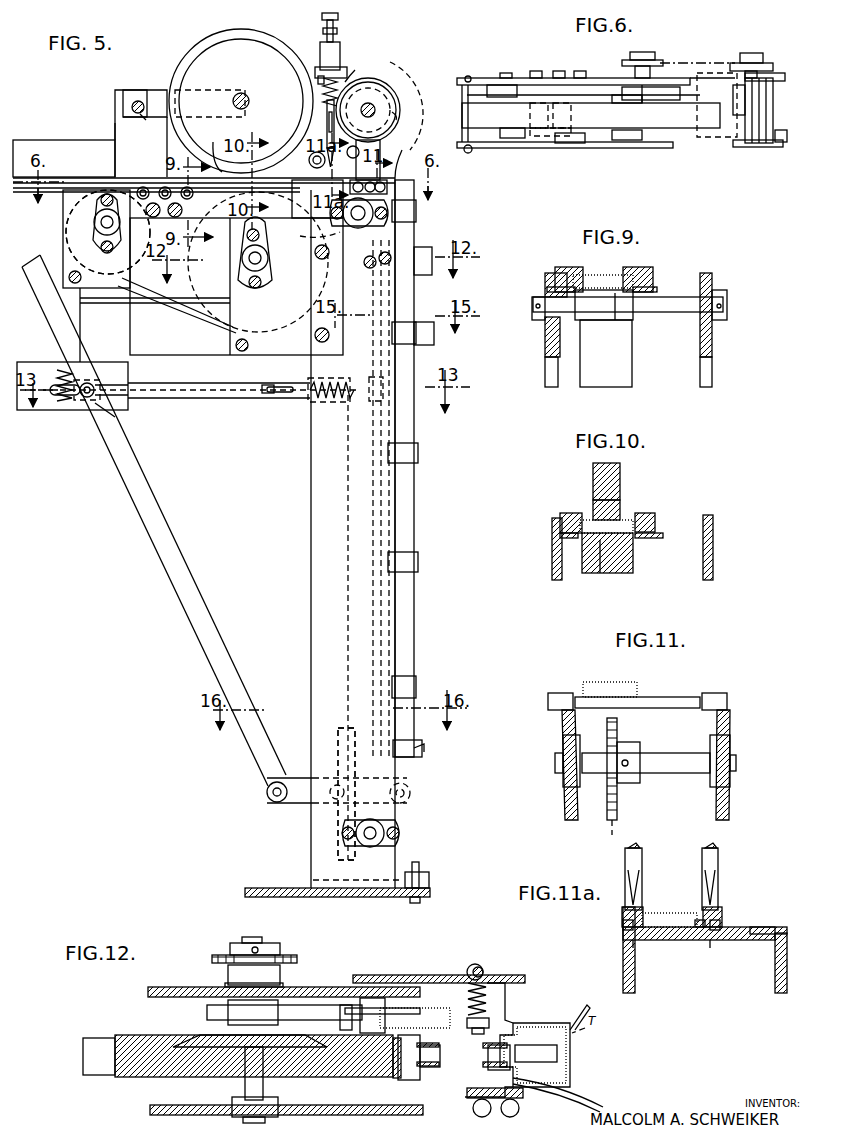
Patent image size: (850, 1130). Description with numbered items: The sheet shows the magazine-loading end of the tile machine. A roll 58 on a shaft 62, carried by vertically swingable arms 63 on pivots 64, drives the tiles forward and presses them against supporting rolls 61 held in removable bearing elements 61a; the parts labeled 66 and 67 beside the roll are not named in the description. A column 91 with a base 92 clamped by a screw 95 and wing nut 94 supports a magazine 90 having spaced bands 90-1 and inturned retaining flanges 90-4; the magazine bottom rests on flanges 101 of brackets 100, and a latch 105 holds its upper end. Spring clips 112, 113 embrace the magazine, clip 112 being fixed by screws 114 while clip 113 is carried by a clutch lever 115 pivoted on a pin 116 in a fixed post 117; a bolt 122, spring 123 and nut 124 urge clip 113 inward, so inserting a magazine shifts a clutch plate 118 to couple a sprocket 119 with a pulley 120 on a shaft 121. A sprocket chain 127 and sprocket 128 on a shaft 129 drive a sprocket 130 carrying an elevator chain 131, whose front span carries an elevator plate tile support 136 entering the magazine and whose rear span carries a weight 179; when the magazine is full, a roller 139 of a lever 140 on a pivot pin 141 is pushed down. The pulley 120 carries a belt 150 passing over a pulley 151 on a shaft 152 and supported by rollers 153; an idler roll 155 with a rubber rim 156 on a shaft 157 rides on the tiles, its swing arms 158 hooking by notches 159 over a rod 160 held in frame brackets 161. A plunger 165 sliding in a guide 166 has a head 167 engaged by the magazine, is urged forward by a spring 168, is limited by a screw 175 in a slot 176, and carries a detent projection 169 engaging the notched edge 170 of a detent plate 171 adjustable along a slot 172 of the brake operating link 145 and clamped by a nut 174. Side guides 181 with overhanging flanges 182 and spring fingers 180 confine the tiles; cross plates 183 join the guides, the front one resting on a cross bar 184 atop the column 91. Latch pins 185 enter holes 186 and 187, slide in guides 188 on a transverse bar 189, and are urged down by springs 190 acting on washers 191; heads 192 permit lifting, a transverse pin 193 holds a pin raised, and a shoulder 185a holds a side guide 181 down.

In FIG. 5, the roll 58 is at (383, 84).
In FIG. 5, the supporting rolls 61 is at (379, 188).
In FIG. 6, the supporting rolls 61 is at (762, 110).
In FIG. 11, the supporting rolls 61 is at (680, 697).
In FIG. 6, the bearing elements 61a is at (765, 75).
In FIG. 11, the bearing elements 61a is at (558, 695).
In FIG. 5, the shaft 62 is at (372, 108).
In FIG. 5, the vertically swingable arms 63 is at (395, 118).
In FIG. 5, the pivots 64 is at (312, 157).
In FIG. 5, the pulley arm 66 is at (358, 70).
In FIG. 5, the support bracket 67 is at (357, 150).
In FIG. 5, the magazine 90 is at (413, 513).
In FIG. 12, the magazine 90 is at (570, 1065).
In FIG. 5, the spaced bands 90-1 is at (408, 211).
In FIG. 12, the tile retaining flanges 90-4 is at (514, 1030).
In FIG. 5, the column 91 is at (318, 543).
In FIG. 6, the column 91 is at (722, 137).
In FIG. 11, the column 91 is at (565, 803).
In FIG. 11a, the column 91 is at (623, 960).
In FIG. 12, the column 91 is at (437, 975).
In FIG. 5, the base 92 is at (323, 880).
In FIG. 5, the wing nut 94 is at (417, 862).
In FIG. 5, the screw 95 is at (417, 903).
In FIG. 5, the brackets 100 is at (450, 775).
In FIG. 5, the flanges 101 is at (424, 747).
In FIG. 5, the latch 105 is at (427, 335).
In FIG. 5, the spring clip 112 is at (420, 250).
In FIG. 12, the spring clip 112 is at (592, 1100).
In FIG. 12, the spring clip 113 is at (570, 1012).
In FIG. 5, the screws 114 is at (384, 265).
In FIG. 12, the screws 114 is at (508, 1115).
In FIG. 6, the clutch lever 115 is at (678, 100).
In FIG. 12, the clutch lever 115 is at (400, 1010).
In FIG. 12, the pin 116 is at (350, 1008).
In FIG. 12, the fixed post 117 is at (335, 1005).
In FIG. 6, the clutch plate 118 is at (618, 103).
In FIG. 12, the clutch plate 118 is at (200, 1038).
In FIG. 6, the sprocket 119 is at (625, 63).
In FIG. 12, the sprocket 119 is at (294, 957).
In FIG. 5, the pulley 120 is at (222, 305).
In FIG. 6, the pulley 120 is at (632, 128).
In FIG. 9, the pulley 120 is at (620, 362).
In FIG. 10, the pulley 120 is at (632, 556).
In FIG. 12, the pulley 120 is at (160, 1075).
In FIG. 5, the shaft 121 is at (258, 262).
In FIG. 6, the shaft 121 is at (645, 52).
In FIG. 12, the shaft 121 is at (240, 1067).
In FIG. 12, the bolt 122 is at (482, 970).
In FIG. 12, the spring 123 is at (470, 1005).
In FIG. 12, the nut 124 is at (478, 1032).
In FIG. 6, the sprocket chain 127 is at (693, 63).
In FIG. 6, the sprocket 128 is at (758, 70).
In FIG. 5, the shaft 129 is at (345, 215).
In FIG. 6, the shaft 129 is at (752, 52).
In FIG. 11, the shaft 129 is at (668, 753).
In FIG. 5, the sprocket 130 is at (303, 238).
In FIG. 6, the sprocket 130 is at (735, 108).
In FIG. 11, the sprocket 130 is at (617, 735).
In FIG. 5, the elevator chain 131 is at (348, 478).
In FIG. 11, the elevator chain 131 is at (615, 825).
In FIG. 12, the elevator chain 131 is at (485, 1060).
In FIG. 12, the elevator plate tile support 136 is at (536, 1053).
In FIG. 5, the roller 139 is at (410, 797).
In FIG. 5, the lever 140 is at (300, 800).
In FIG. 5, the pivot pin 141 is at (323, 777).
In FIG. 5, the brake operating link 145 is at (165, 555).
In FIG. 5, the belt 150 is at (180, 307).
In FIG. 6, the belt 150 is at (695, 128).
In FIG. 9, the belt 150 is at (615, 312).
In FIG. 10, the belt 150 is at (596, 573).
In FIG. 12, the belt 150 is at (95, 1040).
In FIG. 5, the pulley 151 is at (70, 214).
In FIG. 6, the pulley 151 is at (483, 90).
In FIG. 5, the shaft 152 is at (105, 212).
In FIG. 6, the shaft 152 is at (508, 148).
In FIG. 5, the rollers 153 is at (165, 188).
In FIG. 6, the rollers 153 is at (538, 136).
In FIG. 9, the rollers 153 is at (626, 313).
In FIG. 5, the idler roll 155 is at (192, 63).
In FIG. 10, the idler roll 155 is at (593, 483).
In FIG. 10, the resilient rubber rim 156 is at (593, 507).
In FIG. 5, the transverse shaft 157 is at (236, 93).
In FIG. 5, the swing arms 158 is at (158, 97).
In FIG. 5, the notches 159 is at (143, 113).
In FIG. 5, the transverse rod 160 is at (130, 106).
In FIG. 5, the fixed frame brackets 161 is at (115, 124).
In FIG. 5, the plunger 165 is at (108, 385).
In FIG. 5, the horizontal guide 166 is at (232, 391).
In FIG. 5, the head 167 is at (375, 400).
In FIG. 5, the spring 168 is at (337, 400).
In FIG. 5, the detent projection 169 is at (62, 400).
In FIG. 5, the rear notched edge 170 is at (62, 372).
In FIG. 5, the detent plate 171 is at (82, 403).
In FIG. 5, the slot 172 is at (113, 412).
In FIG. 5, the nut 174 is at (88, 383).
In FIG. 5, the pin or screw 175 is at (272, 397).
In FIG. 5, the slot 176 is at (282, 381).
In FIG. 5, the weight 179 is at (340, 728).
In FIG. 12, the weight 179 is at (408, 1070).
In FIG. 5, the spring fingers 180 is at (398, 168).
In FIG. 11, the spring fingers 180 is at (592, 684).
In FIG. 5, the side guides 181 is at (208, 150).
In FIG. 9, the side guides 181 is at (560, 272).
In FIG. 10, the side guides 181 is at (552, 526).
In FIG. 11a, the side guides 181 is at (622, 915).
In FIG. 9, the overhanging flanges 182 is at (620, 272).
In FIG. 10, the overhanging flanges 182 is at (566, 515).
In FIG. 11a, the overhanging flanges 182 is at (652, 912).
In FIG. 9, the cross plates 183 is at (550, 289).
In FIG. 10, the cross plates 183 is at (565, 536).
In FIG. 11a, the cross plates 183 is at (742, 940).
In FIG. 6, the cross bar 184 is at (713, 76).
In FIG. 11a, the cross bar 184 is at (692, 942).
In FIG. 5, the latch pins 185 is at (327, 110).
In FIG. 11a, the latch pins 185 is at (625, 858).
In FIG. 11a, the shoulder 185a is at (642, 860).
In FIG. 11a, the holes 186 is at (722, 915).
In FIG. 11a, the holes 187 is at (636, 943).
In FIG. 5, the guides 188 is at (322, 50).
In FIG. 5, the transverse bar 189 is at (318, 78).
In FIG. 5, the springs 190 is at (323, 85).
In FIG. 5, the washers 191 is at (327, 98).
In FIG. 5, the heads 192 is at (340, 15).
In FIG. 5, the transverse pin 193 is at (338, 31).